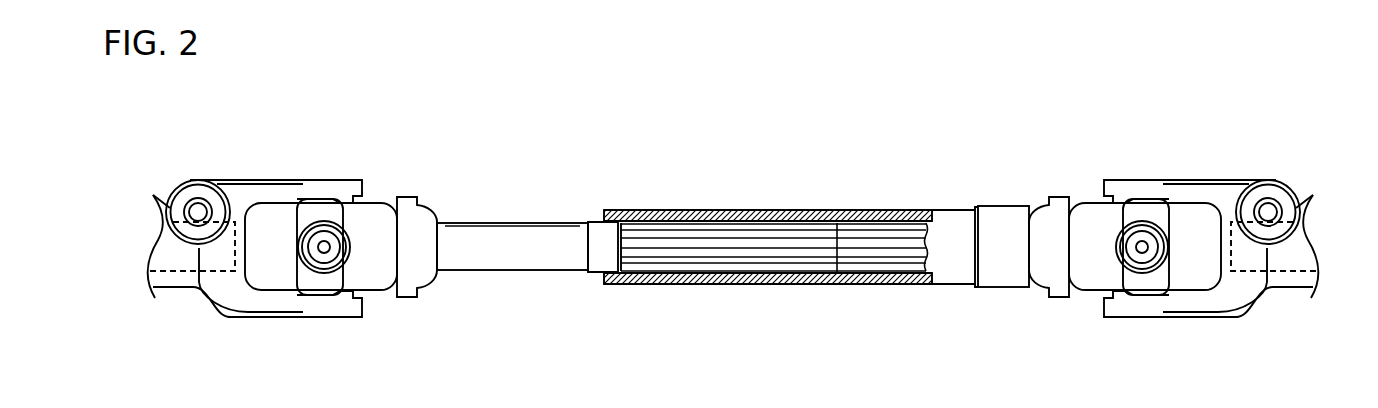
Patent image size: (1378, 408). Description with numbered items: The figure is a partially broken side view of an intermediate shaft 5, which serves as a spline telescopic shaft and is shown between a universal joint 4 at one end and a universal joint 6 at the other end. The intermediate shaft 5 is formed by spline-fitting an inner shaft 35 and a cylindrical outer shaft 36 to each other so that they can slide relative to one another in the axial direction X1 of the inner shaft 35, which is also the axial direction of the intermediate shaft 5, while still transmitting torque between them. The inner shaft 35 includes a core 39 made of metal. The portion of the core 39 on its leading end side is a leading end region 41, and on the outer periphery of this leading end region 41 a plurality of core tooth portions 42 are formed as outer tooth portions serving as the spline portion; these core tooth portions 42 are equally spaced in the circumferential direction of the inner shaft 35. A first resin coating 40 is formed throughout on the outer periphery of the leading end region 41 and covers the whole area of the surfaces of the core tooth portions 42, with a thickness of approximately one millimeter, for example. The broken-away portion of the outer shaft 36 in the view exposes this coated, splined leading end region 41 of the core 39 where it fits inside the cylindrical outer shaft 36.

The universal joint (yoke) 4 is at (1185, 190).
The intermediate shaft 5 is at (926, 158).
The universal joint (yoke) 6 is at (247, 190).
The inner shaft 35 is at (540, 271).
The outer shaft 36 is at (886, 286).
The core 39 is at (541, 222).
The first resin coating 40 is at (632, 221).
The leading end region 41 is at (837, 290).
The core tooth portion 42 is at (712, 237).
The axial direction X1 is at (133, 247).